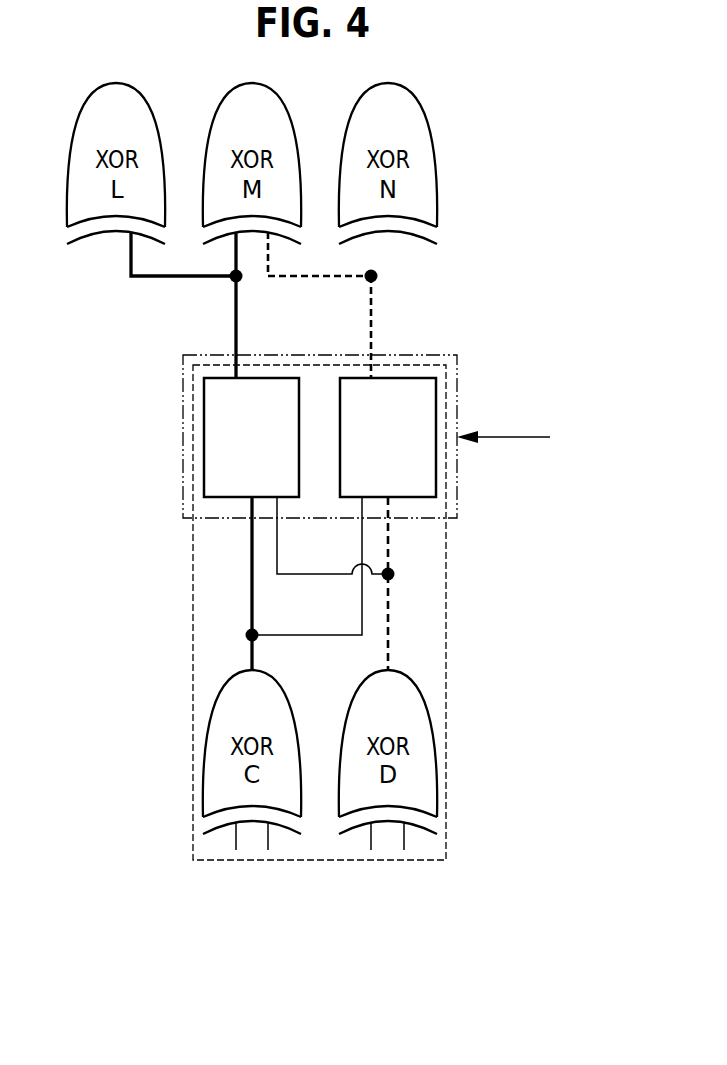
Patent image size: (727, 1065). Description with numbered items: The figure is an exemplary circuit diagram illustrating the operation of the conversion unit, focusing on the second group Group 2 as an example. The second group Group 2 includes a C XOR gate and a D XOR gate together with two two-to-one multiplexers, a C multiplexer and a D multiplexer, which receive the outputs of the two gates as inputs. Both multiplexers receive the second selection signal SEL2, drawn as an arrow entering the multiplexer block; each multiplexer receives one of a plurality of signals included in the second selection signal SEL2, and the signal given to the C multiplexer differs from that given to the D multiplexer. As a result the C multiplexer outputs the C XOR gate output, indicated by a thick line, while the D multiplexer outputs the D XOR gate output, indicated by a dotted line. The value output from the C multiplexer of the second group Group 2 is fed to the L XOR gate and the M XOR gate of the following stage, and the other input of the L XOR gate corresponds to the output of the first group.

The second selection signal SEL2 is at (503, 425).
The second group Group 2 is at (318, 860).